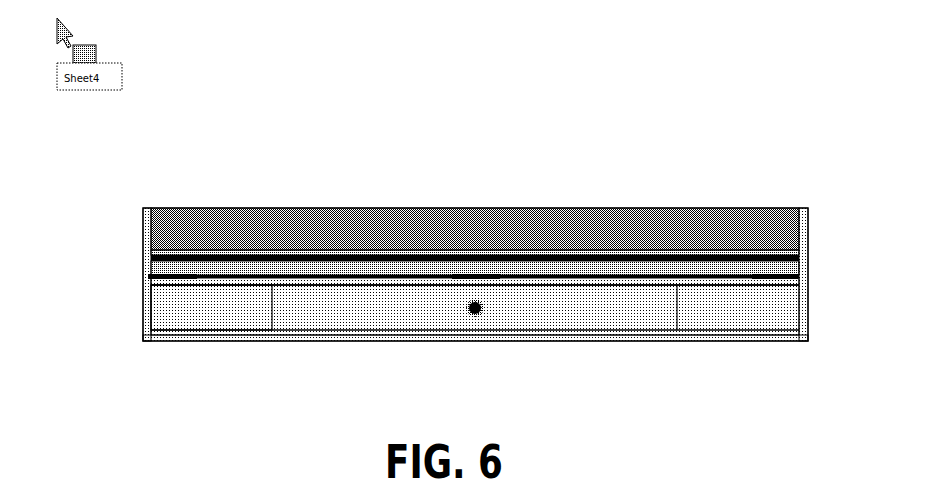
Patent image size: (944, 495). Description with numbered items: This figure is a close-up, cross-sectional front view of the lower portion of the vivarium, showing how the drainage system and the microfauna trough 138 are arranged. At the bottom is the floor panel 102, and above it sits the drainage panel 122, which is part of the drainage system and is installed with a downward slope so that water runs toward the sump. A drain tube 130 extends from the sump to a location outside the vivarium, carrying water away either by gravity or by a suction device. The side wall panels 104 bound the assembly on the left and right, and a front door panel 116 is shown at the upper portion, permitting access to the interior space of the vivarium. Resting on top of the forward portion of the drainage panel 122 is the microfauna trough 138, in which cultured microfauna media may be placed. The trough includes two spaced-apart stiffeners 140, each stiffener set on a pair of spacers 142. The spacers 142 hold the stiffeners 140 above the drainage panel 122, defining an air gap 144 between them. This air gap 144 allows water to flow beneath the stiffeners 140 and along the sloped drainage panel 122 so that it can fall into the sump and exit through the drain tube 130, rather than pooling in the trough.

The microfauna trough 138 is at (228, 158).
The side wall panels 104 is at (138, 300).
The front door panel 116 is at (293, 223).
The stiffeners 140 is at (325, 262).
The spacers 142 is at (142, 277).
The air gap 144 is at (262, 274).
The floor panel 102 is at (388, 333).
The drainage panel 122 is at (223, 313).
The drain tube 130 is at (482, 311).